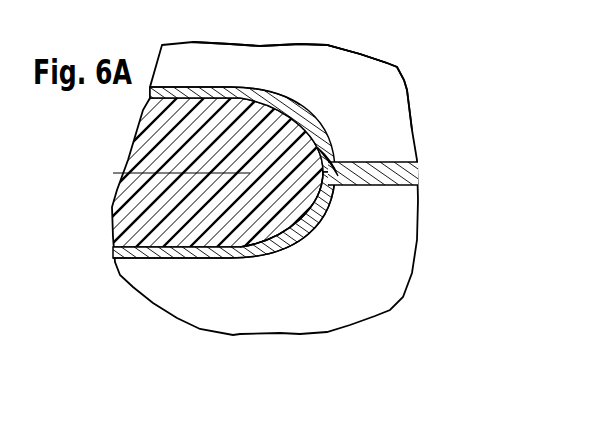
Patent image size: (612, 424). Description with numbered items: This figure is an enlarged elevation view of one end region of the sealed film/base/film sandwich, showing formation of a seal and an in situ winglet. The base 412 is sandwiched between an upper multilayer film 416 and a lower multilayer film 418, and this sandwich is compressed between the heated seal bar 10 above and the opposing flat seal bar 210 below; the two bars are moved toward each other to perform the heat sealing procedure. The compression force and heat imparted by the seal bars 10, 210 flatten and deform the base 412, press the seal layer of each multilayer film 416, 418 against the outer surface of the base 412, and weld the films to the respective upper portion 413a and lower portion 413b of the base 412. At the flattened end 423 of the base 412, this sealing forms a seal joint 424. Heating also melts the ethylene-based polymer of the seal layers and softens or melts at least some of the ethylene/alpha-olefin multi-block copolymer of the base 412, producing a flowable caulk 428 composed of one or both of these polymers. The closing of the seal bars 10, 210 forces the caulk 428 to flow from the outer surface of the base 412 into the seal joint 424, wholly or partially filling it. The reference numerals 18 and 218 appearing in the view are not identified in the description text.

The seal bar 10 is at (427, 71).
The distal tip 18 is at (323, 133).
The flat seal bar 210 is at (419, 262).
The lumen 218 is at (305, 237).
The base 412 is at (116, 192).
The upper portion 413a is at (182, 87).
The lower portion 413b is at (167, 252).
The multilayer film 416 is at (247, 87).
The multilayer film 418 is at (250, 258).
The flattened end 423 is at (320, 96).
The seal joint 424 is at (328, 230).
The flowable caulk 428 is at (330, 186).